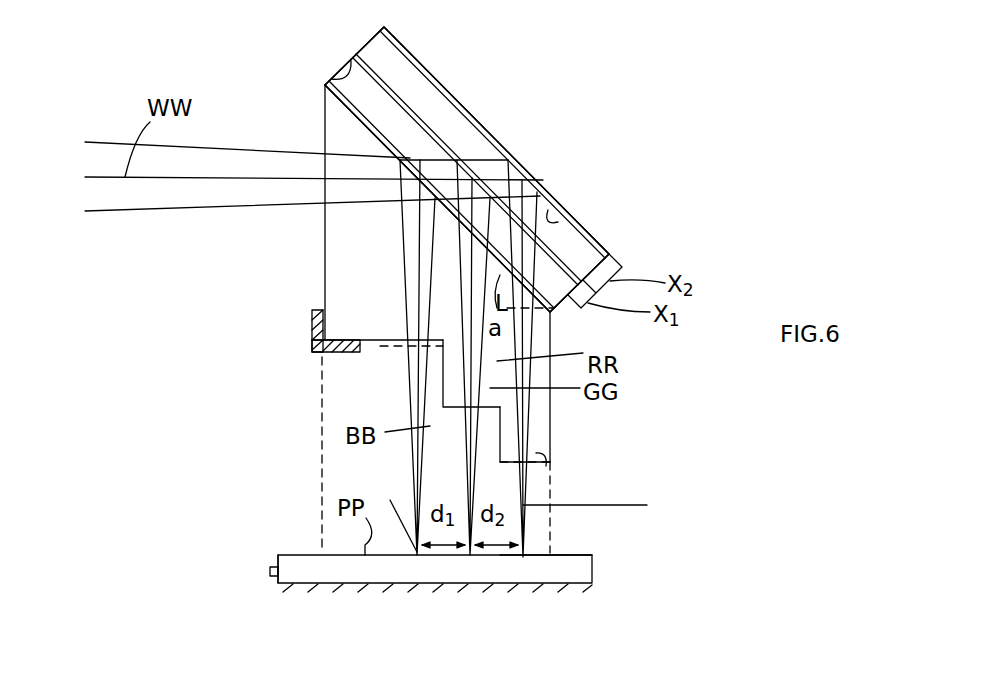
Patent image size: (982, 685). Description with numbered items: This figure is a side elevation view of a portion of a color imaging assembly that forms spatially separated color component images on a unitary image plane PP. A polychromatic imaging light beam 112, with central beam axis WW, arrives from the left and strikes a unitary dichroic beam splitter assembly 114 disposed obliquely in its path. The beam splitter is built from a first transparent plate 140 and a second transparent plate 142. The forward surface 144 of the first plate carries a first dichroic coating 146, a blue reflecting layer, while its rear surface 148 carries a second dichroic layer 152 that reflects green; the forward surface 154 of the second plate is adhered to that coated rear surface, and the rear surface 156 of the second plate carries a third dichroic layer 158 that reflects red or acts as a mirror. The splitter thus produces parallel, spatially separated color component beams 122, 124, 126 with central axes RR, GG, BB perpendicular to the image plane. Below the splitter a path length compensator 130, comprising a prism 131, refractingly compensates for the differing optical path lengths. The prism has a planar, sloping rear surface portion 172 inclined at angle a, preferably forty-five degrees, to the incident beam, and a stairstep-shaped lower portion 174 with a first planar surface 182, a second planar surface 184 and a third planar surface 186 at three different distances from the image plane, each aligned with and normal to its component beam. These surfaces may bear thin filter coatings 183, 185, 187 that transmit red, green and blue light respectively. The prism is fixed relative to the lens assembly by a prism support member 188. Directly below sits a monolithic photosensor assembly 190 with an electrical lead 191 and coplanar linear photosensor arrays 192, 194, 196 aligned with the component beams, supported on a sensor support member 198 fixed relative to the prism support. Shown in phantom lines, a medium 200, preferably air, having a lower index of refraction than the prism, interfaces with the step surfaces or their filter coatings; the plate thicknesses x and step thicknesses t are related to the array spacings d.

The polychromatic imaging light beam 112 is at (99, 160).
The unitary dichroic beam splitter assembly 114 is at (507, 123).
The color component beam 122 is at (607, 504).
The color component beam 124 is at (472, 500).
The color component beam 126 is at (420, 482).
The path length compensator 130 is at (322, 268).
The prism 131 is at (322, 268).
The first transparent plate 140 is at (408, 137).
The second transparent plate 142 is at (483, 153).
The forward surface 144 is at (350, 57).
The first dichroic coating 146 is at (353, 113).
The rear surface 148 is at (405, 55).
The second dichroic layer 152 is at (436, 72).
The forward surface 154 is at (423, 117).
The rear surface 156 is at (560, 200).
The third dichroic layer 158 is at (590, 227).
The rear surface portion 172 is at (335, 68).
The stairstep-shaped lower portion 174 is at (497, 348).
The first planar surface 182 is at (546, 458).
The filter coating 183 is at (550, 467).
The second planar surface 184 is at (445, 413).
The filter coating 185 is at (428, 440).
The third planar surface 186 is at (380, 343).
The filter coating 187 is at (360, 363).
The prism support member 188 is at (313, 325).
The monolithic photosensor assembly 190 is at (598, 578).
The electrical lead 191 is at (268, 572).
The linear photosensor array 192 is at (530, 556).
The linear photosensor array 194 is at (525, 553).
The linear photosensor array 196 is at (393, 510).
The sensor support member 198 is at (273, 587).
The medium 200 is at (320, 448).